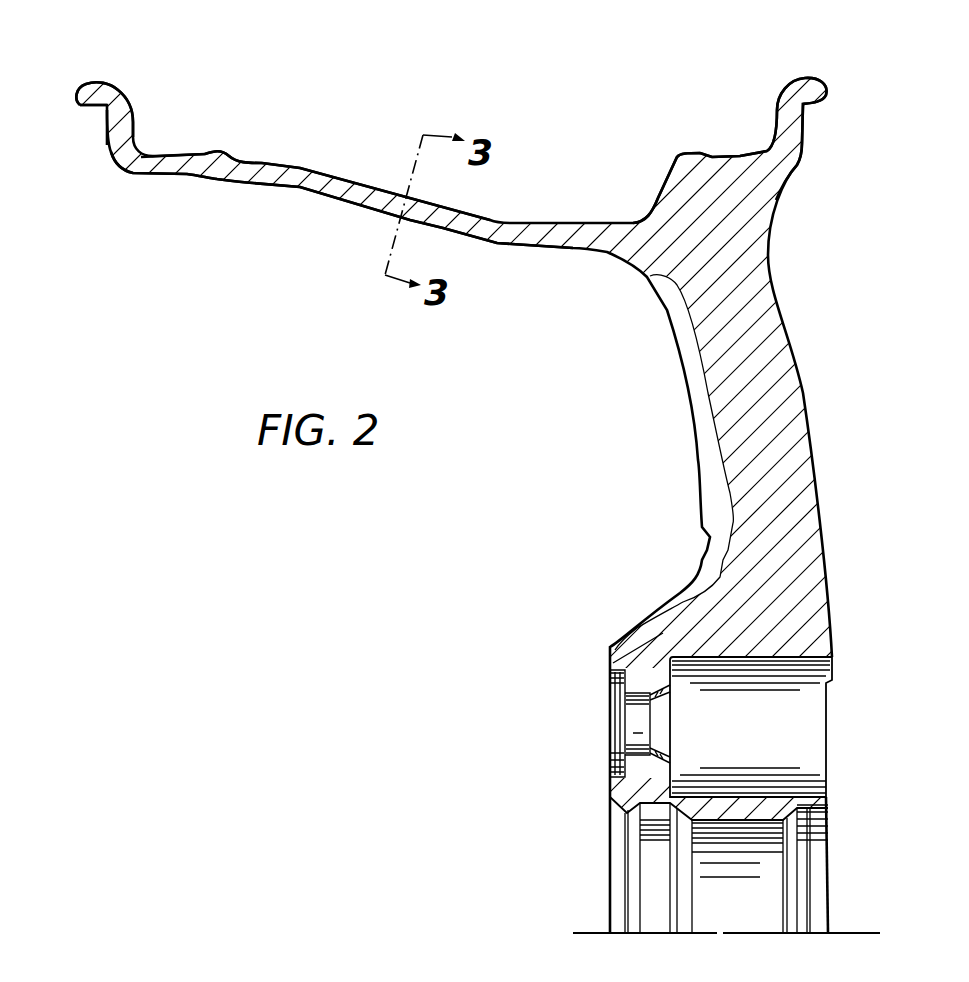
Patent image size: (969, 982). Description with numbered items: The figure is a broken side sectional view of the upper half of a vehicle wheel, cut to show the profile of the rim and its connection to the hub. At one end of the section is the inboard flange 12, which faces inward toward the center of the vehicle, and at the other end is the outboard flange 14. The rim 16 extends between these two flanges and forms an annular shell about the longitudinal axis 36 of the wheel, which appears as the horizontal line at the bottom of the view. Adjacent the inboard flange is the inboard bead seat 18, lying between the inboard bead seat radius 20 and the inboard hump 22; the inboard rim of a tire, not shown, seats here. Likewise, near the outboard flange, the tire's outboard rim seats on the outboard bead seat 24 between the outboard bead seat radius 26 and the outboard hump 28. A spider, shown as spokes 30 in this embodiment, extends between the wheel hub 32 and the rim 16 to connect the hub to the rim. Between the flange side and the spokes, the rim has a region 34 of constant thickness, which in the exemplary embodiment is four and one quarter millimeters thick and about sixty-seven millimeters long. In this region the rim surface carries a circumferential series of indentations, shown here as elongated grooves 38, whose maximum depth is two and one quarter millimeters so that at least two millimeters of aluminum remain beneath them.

The inboard flange 12 is at (82, 84).
The outboard flange 14 is at (822, 74).
The rim 16 is at (190, 174).
The inboard bead seat 18 is at (170, 153).
The inboard bead seat radius 20 is at (128, 129).
The inboard hump 22 is at (228, 150).
The outboard bead seat 24 is at (733, 150).
The outboard bead seat radius 26 is at (775, 147).
The outboard hump 28 is at (682, 150).
The spokes 30 is at (768, 415).
The wheel hub 32 is at (779, 796).
The region 34 is at (451, 235).
The longitudinal axis 36 is at (844, 930).
The elongated grooves 38 is at (335, 178).